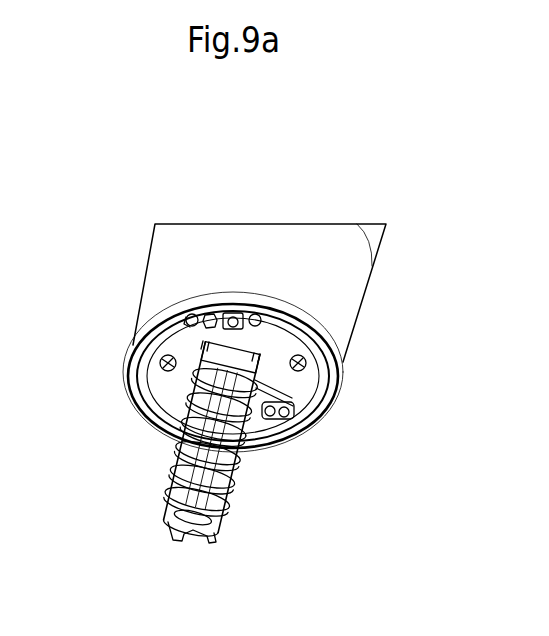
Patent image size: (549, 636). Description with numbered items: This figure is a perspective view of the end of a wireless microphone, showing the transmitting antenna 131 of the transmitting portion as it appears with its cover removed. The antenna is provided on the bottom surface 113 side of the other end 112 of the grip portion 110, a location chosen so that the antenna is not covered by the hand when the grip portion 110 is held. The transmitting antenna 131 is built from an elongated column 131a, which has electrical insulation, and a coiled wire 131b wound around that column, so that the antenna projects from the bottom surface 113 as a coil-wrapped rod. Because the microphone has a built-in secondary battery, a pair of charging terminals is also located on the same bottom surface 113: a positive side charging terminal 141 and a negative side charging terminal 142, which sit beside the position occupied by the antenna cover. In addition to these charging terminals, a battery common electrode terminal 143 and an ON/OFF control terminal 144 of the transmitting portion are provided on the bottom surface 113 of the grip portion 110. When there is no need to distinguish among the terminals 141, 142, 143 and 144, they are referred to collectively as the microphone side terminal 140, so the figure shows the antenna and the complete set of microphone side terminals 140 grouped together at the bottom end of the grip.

The grip portion 110 is at (385, 325).
The other end 112 is at (145, 273).
The bottom surface 113 is at (160, 378).
The transmitting antenna 131 is at (167, 493).
The elongated column 131a is at (192, 532).
The coiled wire 131b is at (175, 473).
The microphone side terminal 140 is at (292, 329).
The positive side charging terminal 141 is at (190, 313).
The negative side charging terminal 142 is at (257, 314).
The battery common electrode terminal 143 is at (261, 420).
The ON/OFF control terminal 144 is at (293, 418).